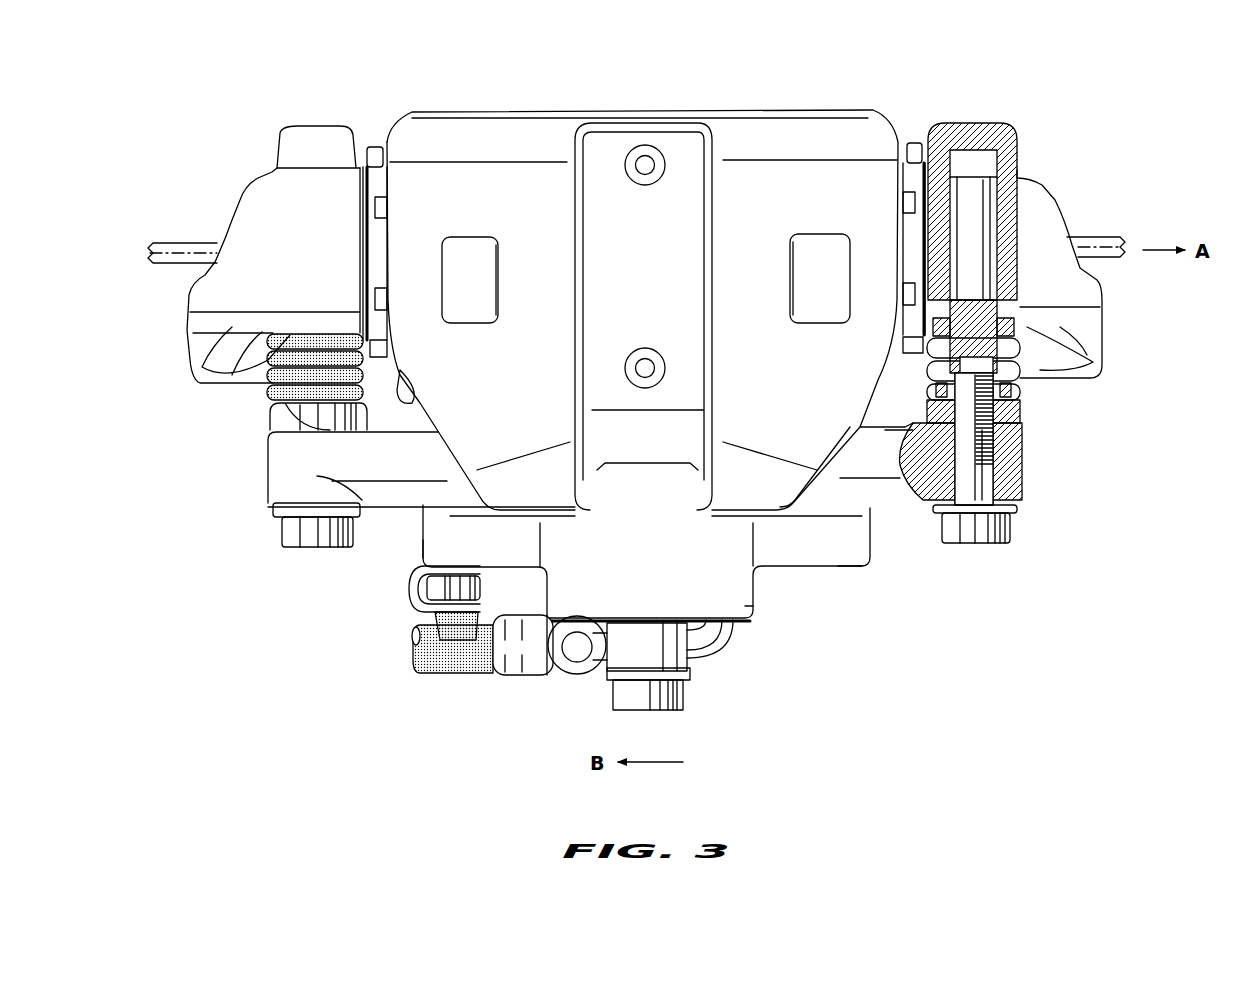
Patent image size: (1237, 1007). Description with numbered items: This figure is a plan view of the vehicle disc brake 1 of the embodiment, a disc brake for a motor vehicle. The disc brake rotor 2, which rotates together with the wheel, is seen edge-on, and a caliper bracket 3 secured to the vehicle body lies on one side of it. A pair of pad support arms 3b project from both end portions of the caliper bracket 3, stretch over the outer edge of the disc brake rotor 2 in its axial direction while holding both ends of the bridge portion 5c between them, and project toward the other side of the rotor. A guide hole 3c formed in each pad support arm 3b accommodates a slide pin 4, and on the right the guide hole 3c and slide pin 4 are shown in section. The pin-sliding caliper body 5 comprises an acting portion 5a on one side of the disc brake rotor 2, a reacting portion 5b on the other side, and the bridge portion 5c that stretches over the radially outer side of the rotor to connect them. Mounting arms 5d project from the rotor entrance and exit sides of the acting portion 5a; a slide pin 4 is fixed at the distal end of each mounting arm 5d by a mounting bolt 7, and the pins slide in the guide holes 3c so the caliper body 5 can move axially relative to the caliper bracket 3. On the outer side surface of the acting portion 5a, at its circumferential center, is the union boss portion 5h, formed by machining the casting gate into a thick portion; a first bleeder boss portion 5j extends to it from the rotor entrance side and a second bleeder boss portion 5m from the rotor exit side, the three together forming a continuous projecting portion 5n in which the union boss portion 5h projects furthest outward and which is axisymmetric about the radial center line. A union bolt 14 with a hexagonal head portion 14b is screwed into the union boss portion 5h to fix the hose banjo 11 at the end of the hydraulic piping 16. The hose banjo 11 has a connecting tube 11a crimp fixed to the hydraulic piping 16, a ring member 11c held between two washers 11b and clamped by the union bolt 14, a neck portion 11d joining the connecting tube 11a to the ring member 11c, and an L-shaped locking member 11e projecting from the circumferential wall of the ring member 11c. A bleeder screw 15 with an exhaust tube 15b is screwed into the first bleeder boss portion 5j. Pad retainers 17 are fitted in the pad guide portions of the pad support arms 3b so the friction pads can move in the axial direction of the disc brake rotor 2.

The vehicle disc brake 1 is at (652, 48).
The disc brake rotor 2 is at (1097, 240).
The caliper bracket 3 is at (674, 253).
The pad support arm 3b is at (240, 227).
The guide hole 3c is at (1000, 275).
The slide pin 4 is at (990, 243).
The caliper body 5 is at (806, 106).
The acting portion 5a is at (618, 596).
The reacting portion 5b is at (513, 125).
The bridge portion 5c is at (392, 240).
The mounting arm 5d is at (397, 490).
The union boss portion 5h is at (745, 608).
The first bleeder boss portion 5j is at (425, 550).
The second bleeder boss portion 5m is at (843, 565).
The continuous projecting portion 5n is at (744, 628).
The mounting bolt 7 is at (290, 530).
The hose banjo 11 is at (621, 658).
The connecting tube 11a is at (547, 678).
The washer 11b is at (607, 678).
The ring member 11c is at (650, 637).
The neck portion 11d is at (597, 640).
The L-shaped locking member 11e is at (710, 643).
The union bolt 14 is at (654, 697).
The hexagonal head portion 14b is at (625, 700).
The bleeder screw 15 is at (448, 603).
The exhaust tube 15b is at (478, 592).
The hydraulic piping 16 is at (413, 664).
The pad retainer 17 is at (370, 144).